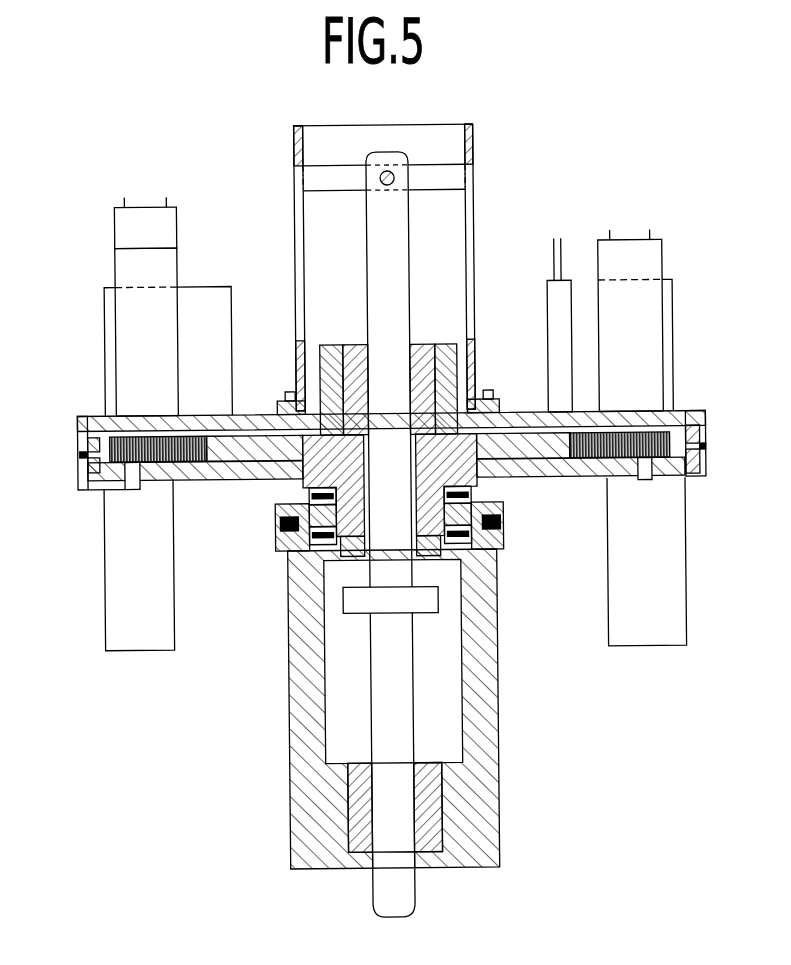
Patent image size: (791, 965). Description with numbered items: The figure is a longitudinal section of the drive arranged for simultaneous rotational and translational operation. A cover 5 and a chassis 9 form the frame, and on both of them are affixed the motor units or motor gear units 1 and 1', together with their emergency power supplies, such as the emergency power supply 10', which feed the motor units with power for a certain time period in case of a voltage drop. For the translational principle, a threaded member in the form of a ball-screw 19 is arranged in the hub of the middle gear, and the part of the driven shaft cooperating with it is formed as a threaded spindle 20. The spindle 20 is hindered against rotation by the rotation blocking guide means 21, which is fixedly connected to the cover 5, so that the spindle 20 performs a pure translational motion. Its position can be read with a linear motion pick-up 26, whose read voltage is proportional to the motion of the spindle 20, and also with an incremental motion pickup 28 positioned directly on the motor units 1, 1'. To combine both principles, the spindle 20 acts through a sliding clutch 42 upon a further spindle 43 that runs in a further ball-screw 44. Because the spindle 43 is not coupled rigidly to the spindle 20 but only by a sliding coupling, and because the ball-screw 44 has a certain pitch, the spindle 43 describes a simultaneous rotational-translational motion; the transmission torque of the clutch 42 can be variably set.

The motor unit 1 is at (395, 563).
The motor gear unit 1' is at (408, 320).
The cover 5 is at (152, 417).
The chassis 9 is at (246, 477).
The emergency power supply 10' is at (177, 334).
The ball-screw 19 is at (413, 347).
The threaded spindle 20 is at (402, 278).
The rotation blocking guide means 21 is at (472, 229).
The linear motion pick-up 26 is at (550, 284).
The incremental motion pickup 28 is at (118, 218).
The sliding clutch 42 is at (426, 605).
The further spindle 43 is at (385, 675).
The further ball-screw 44 is at (368, 778).